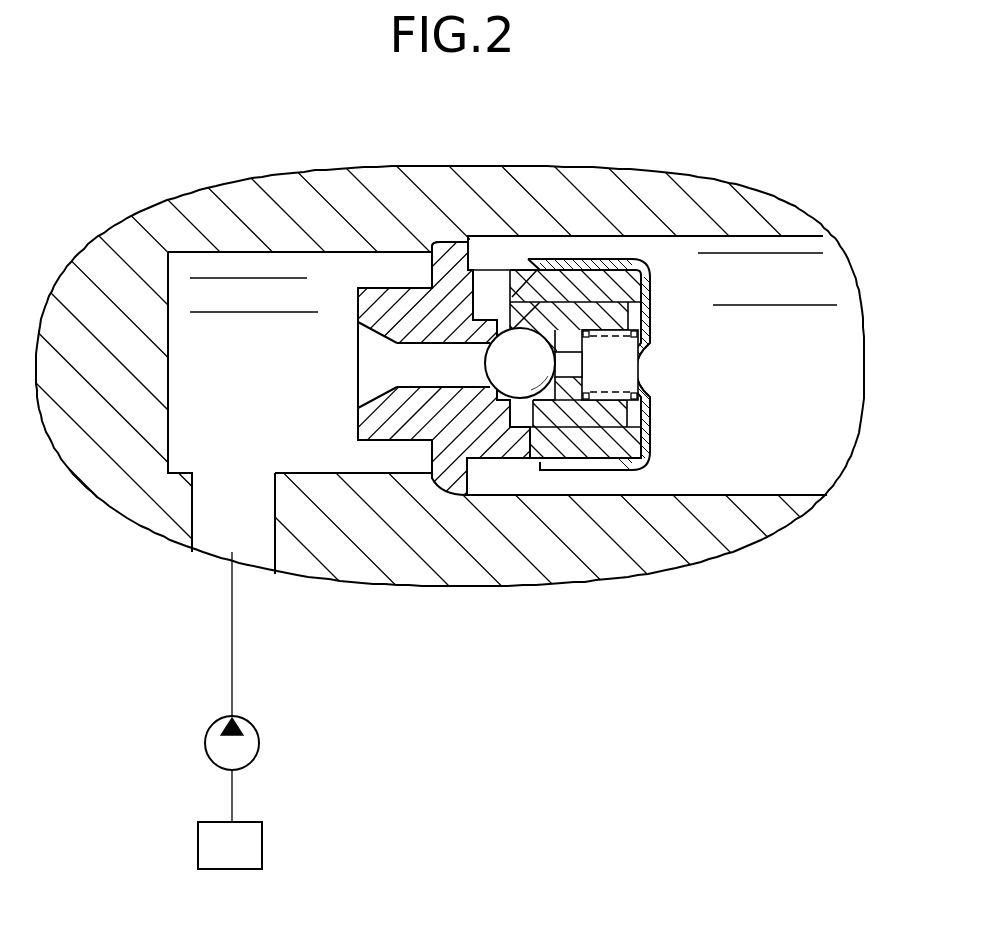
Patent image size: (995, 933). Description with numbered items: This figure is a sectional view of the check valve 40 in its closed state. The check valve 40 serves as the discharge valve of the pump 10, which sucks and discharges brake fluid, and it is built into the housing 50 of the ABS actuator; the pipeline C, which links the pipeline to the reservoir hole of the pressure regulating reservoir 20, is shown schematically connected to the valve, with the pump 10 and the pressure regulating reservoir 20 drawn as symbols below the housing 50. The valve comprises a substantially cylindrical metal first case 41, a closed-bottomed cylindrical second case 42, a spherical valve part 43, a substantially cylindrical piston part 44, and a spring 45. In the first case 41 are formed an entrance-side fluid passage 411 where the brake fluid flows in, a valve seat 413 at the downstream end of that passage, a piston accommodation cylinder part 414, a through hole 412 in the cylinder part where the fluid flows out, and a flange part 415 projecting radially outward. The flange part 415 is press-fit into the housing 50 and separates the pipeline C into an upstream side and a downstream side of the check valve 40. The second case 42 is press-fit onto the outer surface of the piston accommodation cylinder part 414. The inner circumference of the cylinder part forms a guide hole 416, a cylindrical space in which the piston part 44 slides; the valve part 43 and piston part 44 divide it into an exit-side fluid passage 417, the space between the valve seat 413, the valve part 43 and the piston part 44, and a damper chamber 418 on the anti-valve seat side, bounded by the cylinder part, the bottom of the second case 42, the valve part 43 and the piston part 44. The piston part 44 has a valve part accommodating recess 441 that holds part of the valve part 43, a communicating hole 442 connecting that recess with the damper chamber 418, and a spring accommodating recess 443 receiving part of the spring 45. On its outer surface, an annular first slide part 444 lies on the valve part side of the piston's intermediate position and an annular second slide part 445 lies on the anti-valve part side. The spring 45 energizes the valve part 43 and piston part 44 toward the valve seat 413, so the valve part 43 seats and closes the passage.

The pump 10 is at (204, 743).
The pressure regulating reservoir 20 is at (198, 848).
The pipeline C is at (232, 655).
The check valve 40 is at (493, 383).
The first case 41 is at (437, 370).
The entrance-side fluid passage 411 is at (402, 362).
The through hole 412 is at (483, 283).
The valve seat 413 is at (450, 486).
The piston accommodation cylinder part 414 is at (557, 280).
The flange part 415 is at (443, 250).
The guide hole 416 is at (583, 283).
The exit-side fluid passage 417 is at (527, 462).
The damper chamber 418 is at (650, 347).
The second case 42 is at (631, 414).
The valve part 43 is at (508, 347).
The piston part 44 is at (647, 377).
The valve part accommodating recess 441 is at (583, 403).
The communicating hole 442 is at (568, 378).
The spring accommodating recess 443 is at (600, 428).
The first slide part 444 is at (540, 462).
The second slide part 445 is at (603, 400).
The spring 45 is at (628, 272).
The housing 50 is at (130, 502).